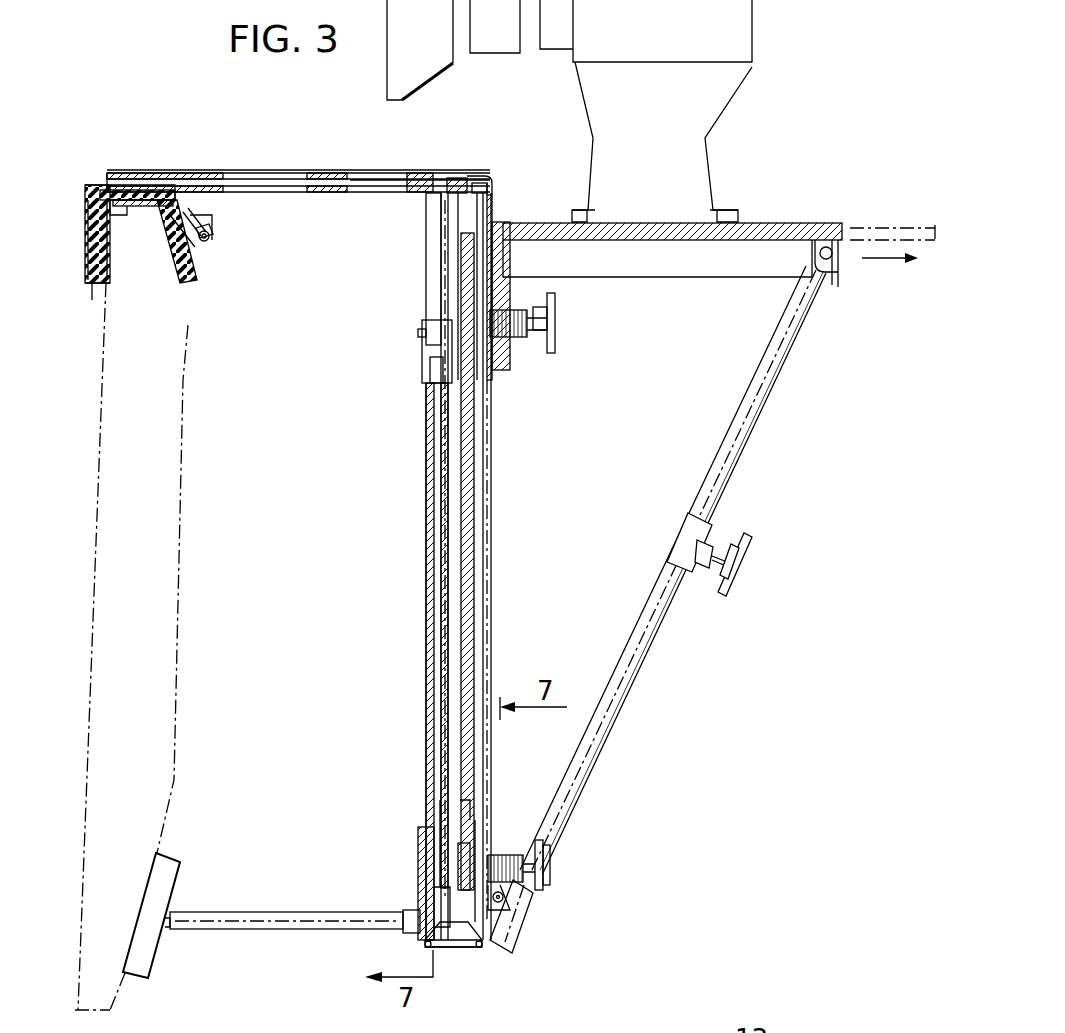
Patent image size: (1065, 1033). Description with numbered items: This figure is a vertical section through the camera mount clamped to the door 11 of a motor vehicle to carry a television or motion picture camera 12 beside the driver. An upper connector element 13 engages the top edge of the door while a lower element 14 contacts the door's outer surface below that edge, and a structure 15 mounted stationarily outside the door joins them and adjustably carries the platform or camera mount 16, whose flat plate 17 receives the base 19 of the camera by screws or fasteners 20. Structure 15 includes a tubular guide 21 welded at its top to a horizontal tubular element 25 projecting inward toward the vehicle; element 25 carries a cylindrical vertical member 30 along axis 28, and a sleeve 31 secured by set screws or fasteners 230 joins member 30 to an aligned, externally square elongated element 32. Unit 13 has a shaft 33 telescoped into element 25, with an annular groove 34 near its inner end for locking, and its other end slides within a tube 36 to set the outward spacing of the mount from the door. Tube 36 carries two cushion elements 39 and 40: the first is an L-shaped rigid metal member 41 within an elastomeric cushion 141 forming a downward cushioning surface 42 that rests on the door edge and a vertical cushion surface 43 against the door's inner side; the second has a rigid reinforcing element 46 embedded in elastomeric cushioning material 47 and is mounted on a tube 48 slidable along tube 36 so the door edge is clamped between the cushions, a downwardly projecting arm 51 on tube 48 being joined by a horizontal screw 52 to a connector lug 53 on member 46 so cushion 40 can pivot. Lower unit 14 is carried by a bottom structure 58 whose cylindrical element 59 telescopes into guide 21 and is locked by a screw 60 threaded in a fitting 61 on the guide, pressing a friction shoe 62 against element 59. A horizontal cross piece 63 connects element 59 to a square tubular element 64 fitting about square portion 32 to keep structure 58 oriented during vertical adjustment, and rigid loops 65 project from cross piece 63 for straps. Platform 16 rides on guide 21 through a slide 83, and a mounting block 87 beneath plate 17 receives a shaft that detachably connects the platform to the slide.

The door 11 is at (185, 465).
The camera 12 is at (569, 50).
The upper connector element 13 is at (227, 144).
The lower element 14 is at (270, 907).
The structure 15 is at (514, 533).
The platform 16 is at (766, 221).
The flat plate 17 is at (803, 231).
The base 19 is at (662, 142).
The screws or fasteners 20 is at (730, 213).
The tubular guide 21 is at (490, 580).
The tubular element 25 is at (430, 174).
The axis 28 is at (433, 240).
The vertical member 30 is at (426, 285).
The sleeve 31 is at (422, 347).
The elongated element 32 is at (430, 565).
The shaft 33 is at (368, 174).
The annular groove 34 is at (453, 180).
The tube 36 is at (275, 174).
The cushion element 39 is at (74, 212).
The cushion element 40 is at (200, 276).
The L-shaped rigid metal member 41 is at (97, 262).
The cushioning surface 42 is at (135, 208).
The cushion surface 43 is at (105, 186).
The reinforcing element 46 is at (176, 281).
The cushioning material 47 is at (186, 214).
The tube 48 is at (200, 172).
The arm 51 is at (207, 218).
The screw 52 is at (208, 235).
The connector lug 53 is at (206, 244).
The bottom structure 58 is at (494, 960).
The element 59 is at (478, 637).
The screw 60 is at (552, 868).
The fitting 61 is at (507, 882).
The friction shoe 62 is at (504, 906).
The cross piece 63 is at (457, 928).
The tubular element 64 is at (430, 748).
The loops 65 is at (425, 942).
The slide 83 is at (510, 275).
The mounting block 87 is at (660, 258).
The cushion 141 is at (92, 286).
The set screws or fasteners 230 is at (418, 333).